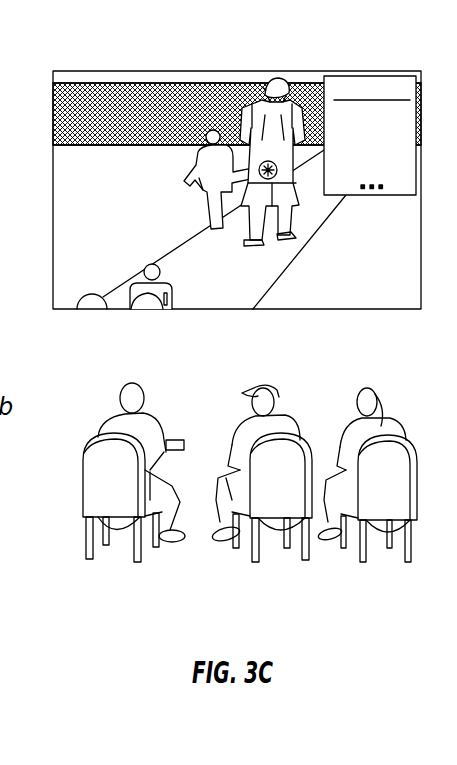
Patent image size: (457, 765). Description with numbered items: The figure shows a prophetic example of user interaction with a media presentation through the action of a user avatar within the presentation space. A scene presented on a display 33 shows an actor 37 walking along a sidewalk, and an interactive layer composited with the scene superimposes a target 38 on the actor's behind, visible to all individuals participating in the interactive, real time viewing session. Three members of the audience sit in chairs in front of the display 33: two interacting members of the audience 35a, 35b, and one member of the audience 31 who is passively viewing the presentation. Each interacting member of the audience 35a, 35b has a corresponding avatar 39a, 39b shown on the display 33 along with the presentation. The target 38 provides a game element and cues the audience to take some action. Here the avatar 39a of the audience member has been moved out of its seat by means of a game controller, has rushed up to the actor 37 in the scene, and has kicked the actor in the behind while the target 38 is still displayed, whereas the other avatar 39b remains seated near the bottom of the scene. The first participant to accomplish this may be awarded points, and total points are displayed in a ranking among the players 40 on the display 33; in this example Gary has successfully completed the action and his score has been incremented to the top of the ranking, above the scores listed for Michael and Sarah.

The display 33 is at (99, 64).
The actor 37 is at (290, 200).
The target 38 is at (276, 178).
The avatar 39a is at (195, 191).
The avatar 39b is at (142, 304).
The ranking among the players 40 is at (372, 198).
The member of the audience 35a is at (110, 416).
The member of the audience 31 is at (285, 420).
The member of the audience 35b is at (390, 422).